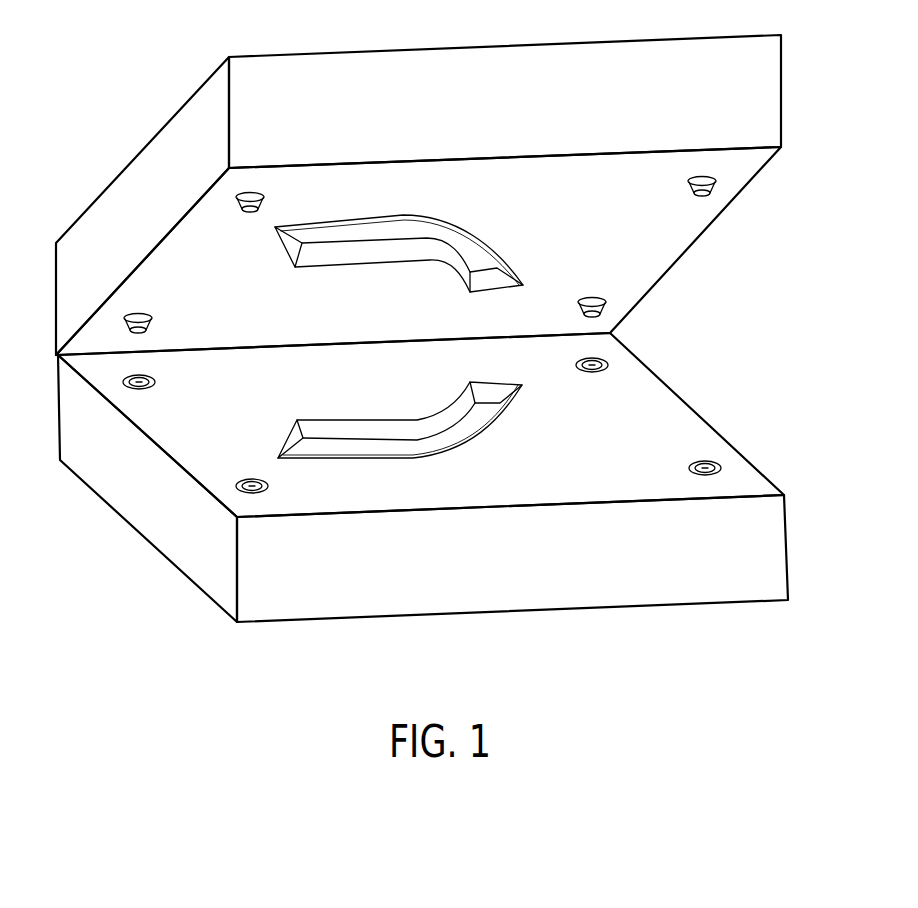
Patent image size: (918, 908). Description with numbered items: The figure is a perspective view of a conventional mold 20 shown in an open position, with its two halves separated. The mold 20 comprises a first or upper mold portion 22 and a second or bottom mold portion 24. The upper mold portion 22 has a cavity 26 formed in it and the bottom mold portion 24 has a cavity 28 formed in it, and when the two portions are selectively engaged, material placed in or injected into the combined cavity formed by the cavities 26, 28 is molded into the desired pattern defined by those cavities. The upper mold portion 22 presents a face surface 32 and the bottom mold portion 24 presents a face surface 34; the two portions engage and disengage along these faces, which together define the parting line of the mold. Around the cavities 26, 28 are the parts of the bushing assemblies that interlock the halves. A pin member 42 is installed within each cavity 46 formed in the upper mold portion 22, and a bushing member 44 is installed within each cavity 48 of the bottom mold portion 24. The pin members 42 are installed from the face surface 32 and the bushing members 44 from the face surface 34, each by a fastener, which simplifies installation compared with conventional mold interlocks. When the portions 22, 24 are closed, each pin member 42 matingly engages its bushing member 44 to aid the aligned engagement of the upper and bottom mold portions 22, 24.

The mold 20 is at (64, 98).
The first or upper mold portion 22 is at (783, 80).
The second or bottom mold portion 24 is at (789, 552).
The cavity 26 is at (375, 263).
The cavity 28 is at (347, 445).
The face surface 32 is at (395, 170).
The face surface 34 is at (494, 487).
The pin member 42 is at (251, 212).
The bushing member 44 is at (137, 388).
The cavity 46 is at (263, 197).
The cavity 48 is at (155, 380).